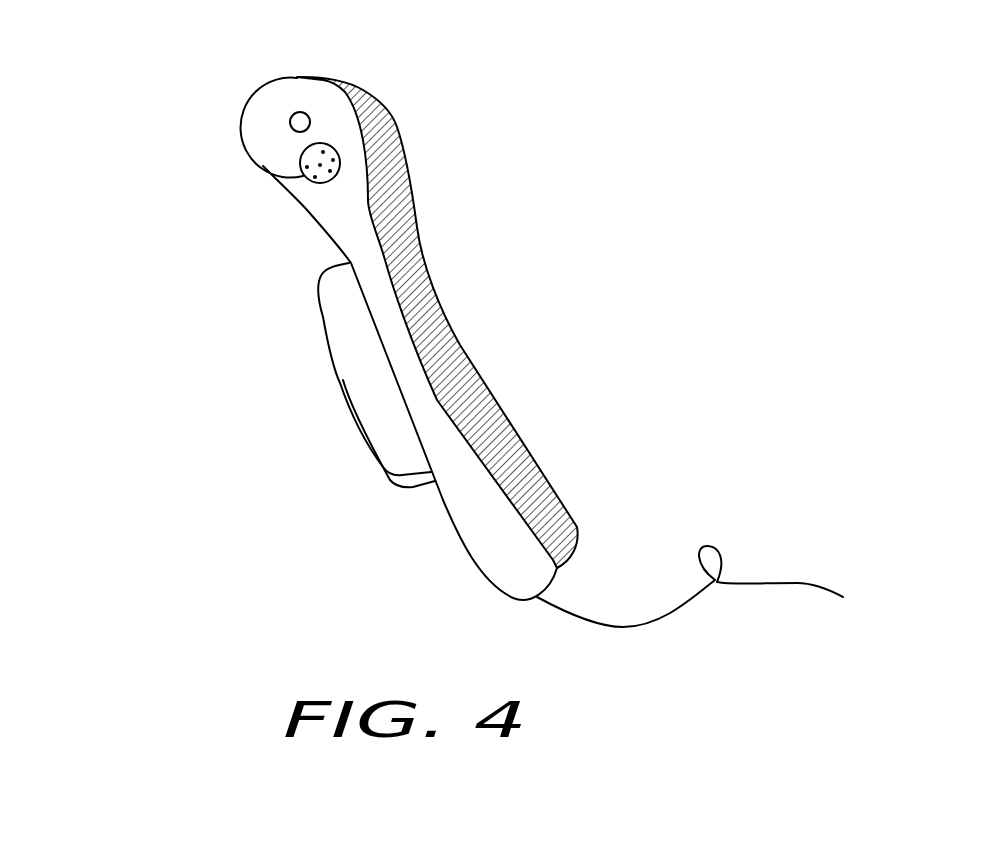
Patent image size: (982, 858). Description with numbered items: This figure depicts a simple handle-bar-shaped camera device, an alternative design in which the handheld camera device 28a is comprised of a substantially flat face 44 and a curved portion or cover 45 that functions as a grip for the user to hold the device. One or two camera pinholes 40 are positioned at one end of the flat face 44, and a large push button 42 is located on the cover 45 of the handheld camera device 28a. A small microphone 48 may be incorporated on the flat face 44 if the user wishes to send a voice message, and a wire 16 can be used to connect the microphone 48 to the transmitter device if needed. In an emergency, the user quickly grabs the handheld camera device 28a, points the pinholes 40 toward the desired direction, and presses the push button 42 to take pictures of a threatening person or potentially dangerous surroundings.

The handheld camera device 28a is at (283, 241).
The camera pinholes 40 is at (290, 122).
The microphone 48 is at (303, 175).
The push button 42 is at (363, 343).
The flat face 44 is at (503, 525).
The cover 45 is at (419, 277).
The wire 16 is at (700, 549).